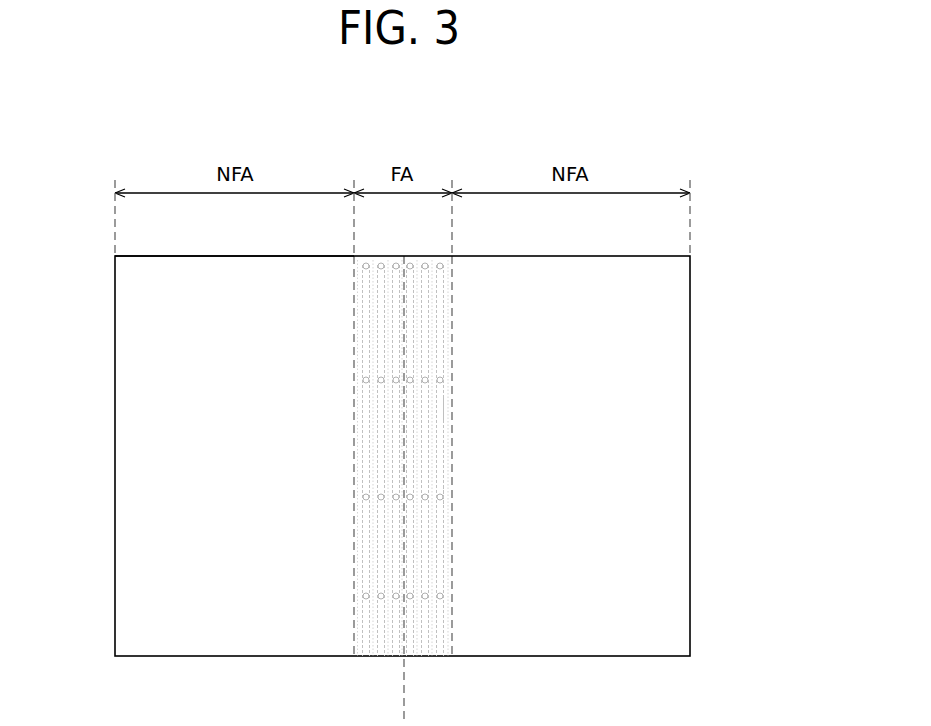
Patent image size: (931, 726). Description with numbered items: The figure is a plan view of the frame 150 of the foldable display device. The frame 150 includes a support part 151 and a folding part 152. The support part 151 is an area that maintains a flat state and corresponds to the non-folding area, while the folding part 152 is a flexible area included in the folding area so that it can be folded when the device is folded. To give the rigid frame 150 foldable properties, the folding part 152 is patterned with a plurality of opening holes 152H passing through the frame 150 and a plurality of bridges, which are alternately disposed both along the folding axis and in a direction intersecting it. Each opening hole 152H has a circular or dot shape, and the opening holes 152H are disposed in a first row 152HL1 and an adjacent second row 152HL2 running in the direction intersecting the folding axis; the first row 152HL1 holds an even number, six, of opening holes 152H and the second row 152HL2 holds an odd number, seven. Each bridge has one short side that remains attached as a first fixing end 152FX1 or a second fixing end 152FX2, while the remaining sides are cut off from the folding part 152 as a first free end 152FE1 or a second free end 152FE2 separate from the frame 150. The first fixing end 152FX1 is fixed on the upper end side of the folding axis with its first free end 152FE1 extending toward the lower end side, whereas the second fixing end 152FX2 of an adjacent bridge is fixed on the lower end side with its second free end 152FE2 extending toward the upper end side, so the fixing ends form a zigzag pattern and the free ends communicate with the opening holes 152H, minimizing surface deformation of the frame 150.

The frame 150 is at (698, 131).
The support part 151 is at (668, 290).
The folding part 152 is at (410, 256).
The first row 152HL1 is at (363, 380).
The second row 152HL2 is at (363, 497).
The opening hole 152H is at (366, 595).
The first fixing end 152FX1 is at (447, 383).
The second fixing end 152FX2 is at (446, 494).
The first free end 152FE1 is at (447, 448).
The second free end 152FE2 is at (441, 411).